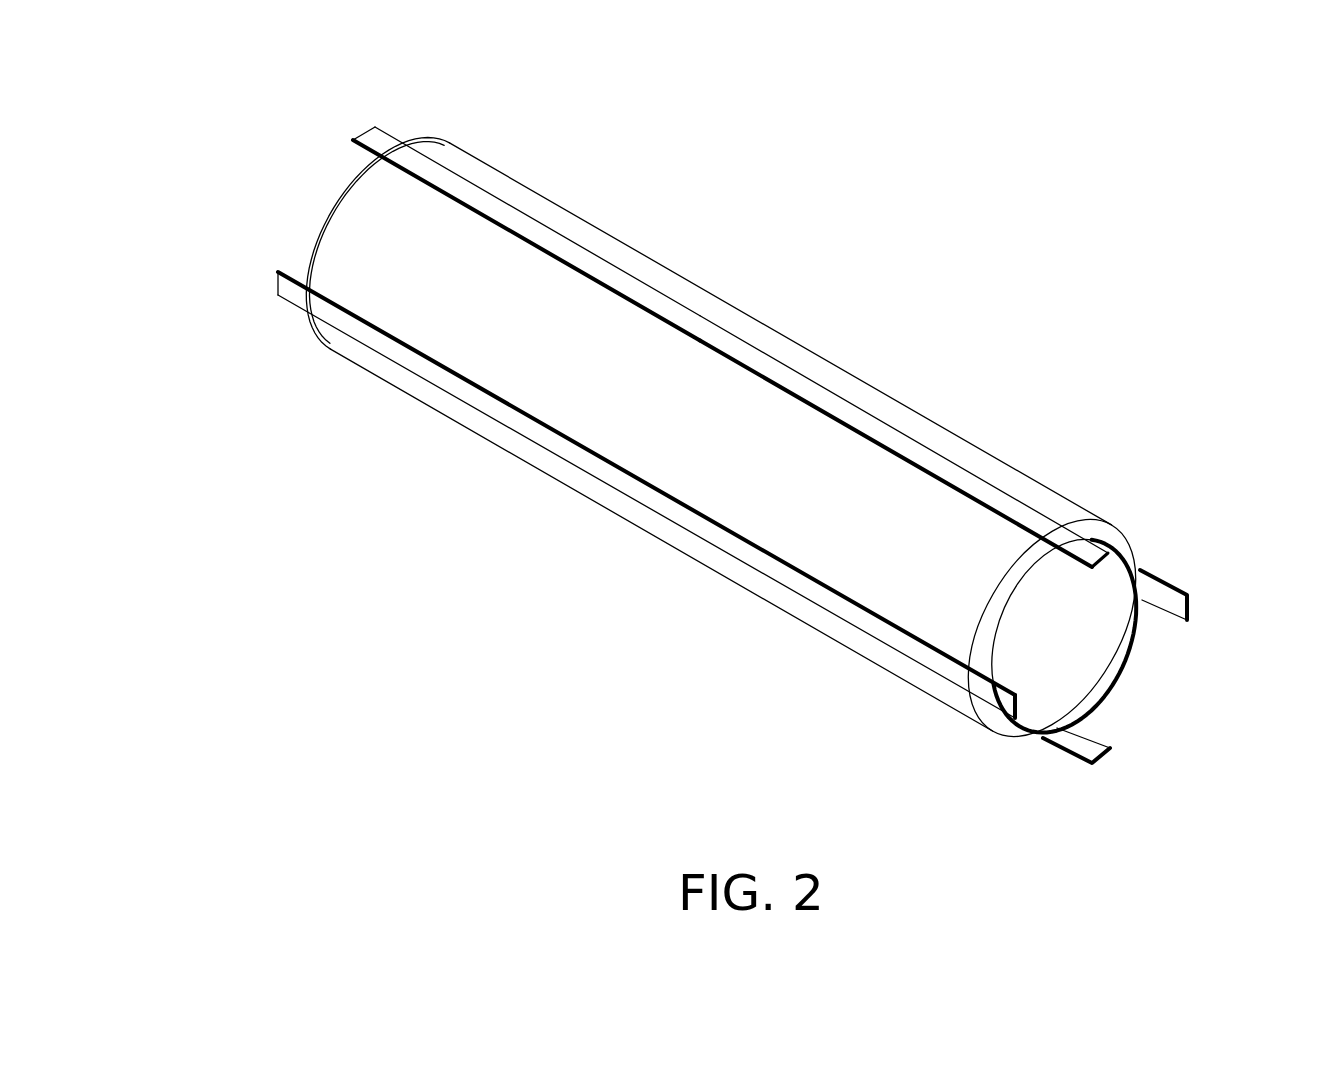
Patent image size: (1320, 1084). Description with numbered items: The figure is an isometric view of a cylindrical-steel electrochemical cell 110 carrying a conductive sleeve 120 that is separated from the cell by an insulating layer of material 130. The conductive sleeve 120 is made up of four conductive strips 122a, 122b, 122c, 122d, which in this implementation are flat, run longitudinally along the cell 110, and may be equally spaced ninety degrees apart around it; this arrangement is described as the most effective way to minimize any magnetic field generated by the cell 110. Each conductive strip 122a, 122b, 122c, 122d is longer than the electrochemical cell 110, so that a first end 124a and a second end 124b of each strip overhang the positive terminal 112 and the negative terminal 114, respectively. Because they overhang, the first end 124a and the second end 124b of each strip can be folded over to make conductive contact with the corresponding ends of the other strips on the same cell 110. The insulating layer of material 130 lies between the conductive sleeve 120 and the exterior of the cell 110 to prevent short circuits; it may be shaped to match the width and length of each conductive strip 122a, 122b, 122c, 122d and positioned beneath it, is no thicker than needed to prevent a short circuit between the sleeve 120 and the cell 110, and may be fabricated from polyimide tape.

The cylindrical-steel electrochemical cell 110 is at (1100, 632).
The positive terminal 112 is at (272, 233).
The negative terminal 114 is at (1052, 663).
The conductive sleeve 120 is at (693, 318).
The conductive strip 122a is at (905, 438).
The conductive strip 122b is at (1176, 598).
The conductive strip 122c is at (1090, 738).
The conductive strip 122d is at (600, 467).
The first end 124a is at (372, 133).
The second end 124b is at (1093, 550).
The insulating layer of material 130 is at (365, 223).